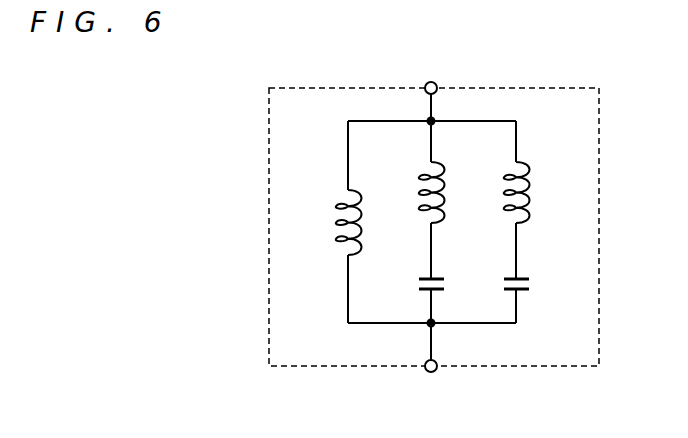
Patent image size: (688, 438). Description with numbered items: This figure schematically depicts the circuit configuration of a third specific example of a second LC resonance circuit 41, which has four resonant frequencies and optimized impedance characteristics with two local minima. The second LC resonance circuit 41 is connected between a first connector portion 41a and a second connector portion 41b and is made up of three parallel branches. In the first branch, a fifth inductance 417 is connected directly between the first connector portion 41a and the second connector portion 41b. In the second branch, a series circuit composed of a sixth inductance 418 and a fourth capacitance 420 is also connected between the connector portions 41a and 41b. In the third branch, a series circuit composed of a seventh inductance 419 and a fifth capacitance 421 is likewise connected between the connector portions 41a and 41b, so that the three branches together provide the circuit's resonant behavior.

The second LC resonance circuit 41 is at (538, 84).
The first connector portion 41a is at (432, 81).
The second connector portion 41b is at (432, 373).
The fifth inductance 417 is at (343, 207).
The sixth inductance 418 is at (447, 175).
The seventh inductance 419 is at (531, 175).
The fourth capacitance 420 is at (446, 284).
The fifth capacitance 421 is at (531, 284).